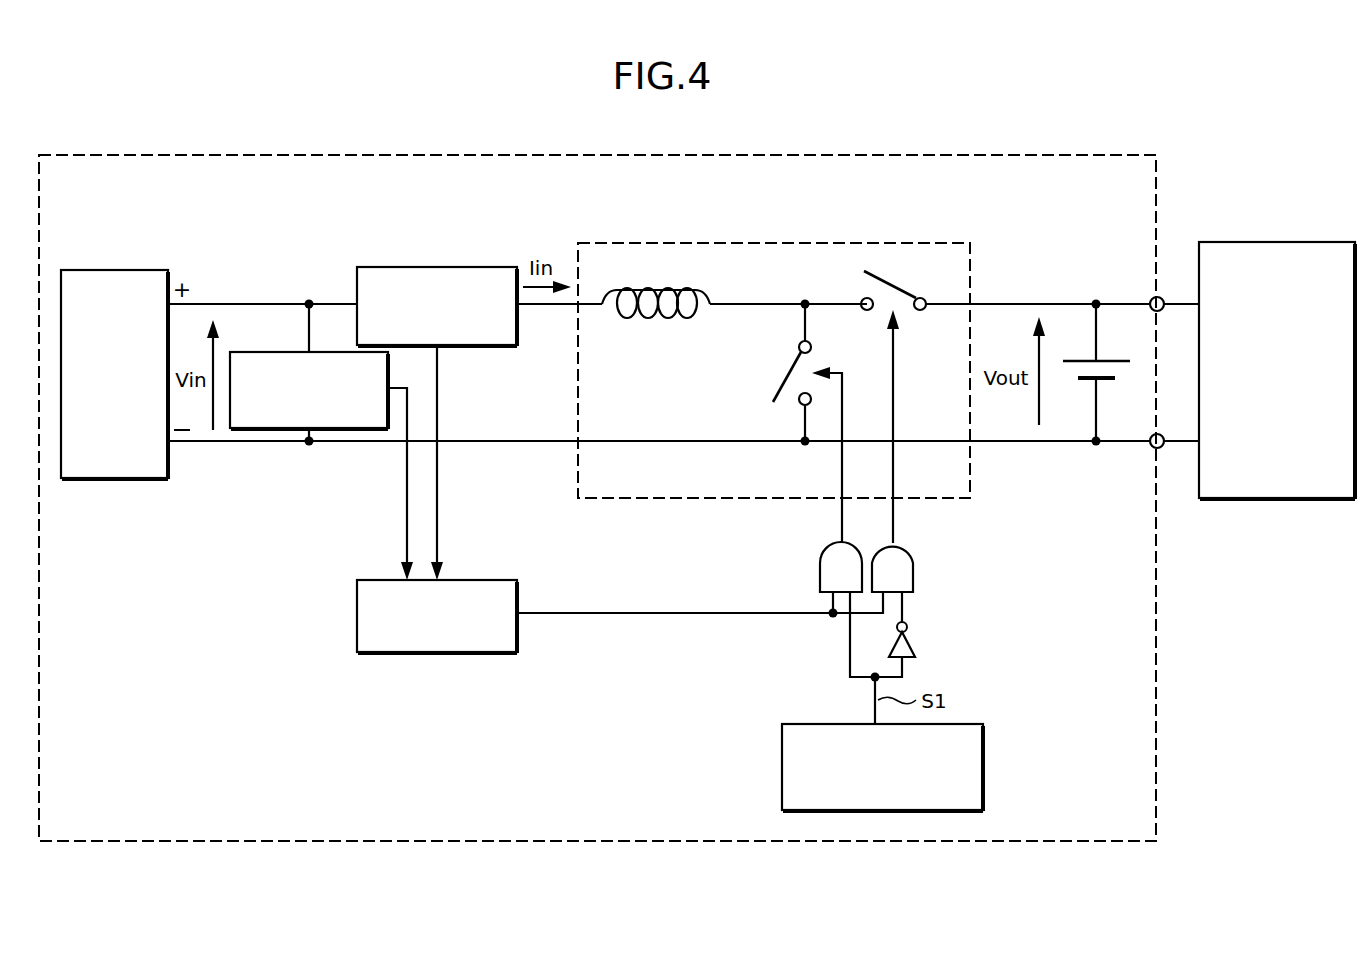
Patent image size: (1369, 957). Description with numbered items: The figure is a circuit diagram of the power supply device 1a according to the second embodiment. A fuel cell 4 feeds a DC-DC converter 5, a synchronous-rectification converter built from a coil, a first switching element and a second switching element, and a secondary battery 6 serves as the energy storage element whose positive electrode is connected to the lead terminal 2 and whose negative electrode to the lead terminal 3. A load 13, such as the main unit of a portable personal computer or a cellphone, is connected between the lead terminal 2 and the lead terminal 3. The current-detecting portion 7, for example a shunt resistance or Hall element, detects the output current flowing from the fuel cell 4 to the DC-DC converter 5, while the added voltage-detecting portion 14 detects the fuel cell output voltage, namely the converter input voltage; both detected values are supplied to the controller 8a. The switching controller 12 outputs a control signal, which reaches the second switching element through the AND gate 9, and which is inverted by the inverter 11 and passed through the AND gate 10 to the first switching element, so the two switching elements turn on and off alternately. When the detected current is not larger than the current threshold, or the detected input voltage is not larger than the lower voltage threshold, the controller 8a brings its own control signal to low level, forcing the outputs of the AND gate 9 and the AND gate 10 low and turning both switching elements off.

The power supply device 1a is at (1092, 155).
The lead terminal 2 is at (1151, 298).
The lead terminal 3 is at (1151, 447).
The fuel cell 4 is at (133, 270).
The DC-DC converter 5 is at (905, 243).
The secondary battery 6 is at (1086, 361).
The current-detecting portion 7 is at (475, 267).
The controller 8a is at (357, 604).
The AND gate 9 is at (820, 570).
The AND gate 10 is at (913, 570).
The inverter 11 is at (915, 641).
The switching controller 12 is at (983, 755).
The load 13 is at (1316, 242).
The voltage-detecting portion 14 is at (270, 352).